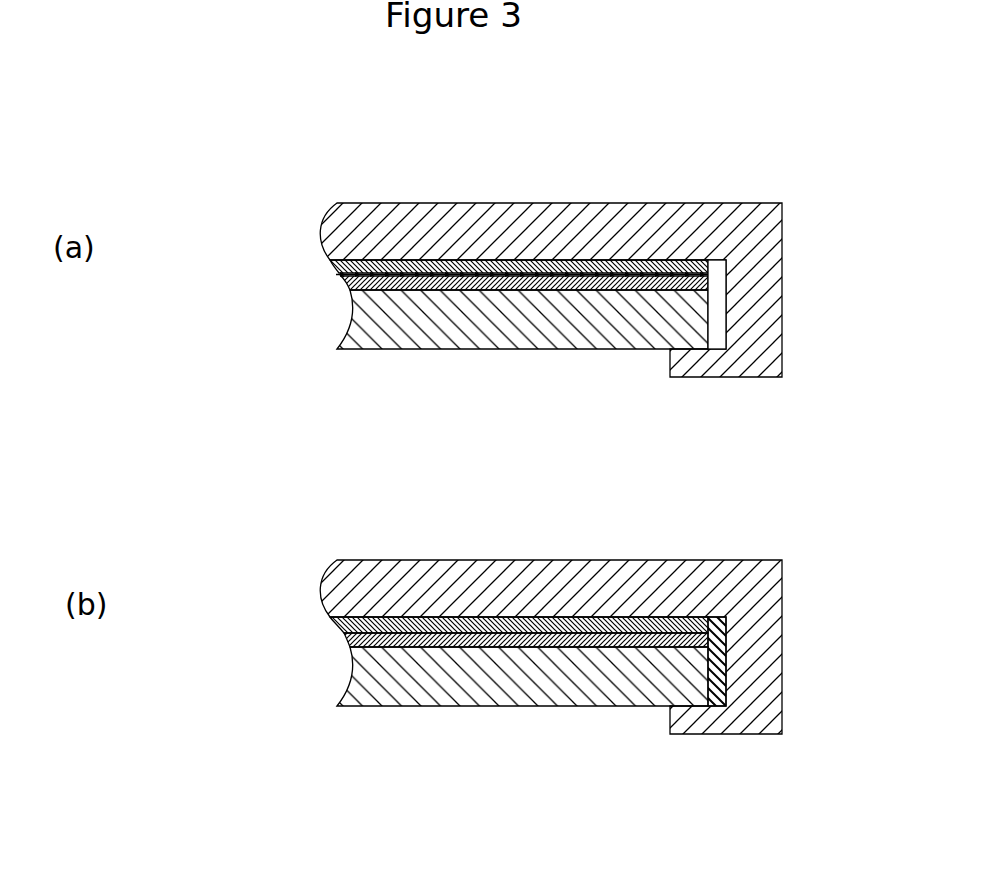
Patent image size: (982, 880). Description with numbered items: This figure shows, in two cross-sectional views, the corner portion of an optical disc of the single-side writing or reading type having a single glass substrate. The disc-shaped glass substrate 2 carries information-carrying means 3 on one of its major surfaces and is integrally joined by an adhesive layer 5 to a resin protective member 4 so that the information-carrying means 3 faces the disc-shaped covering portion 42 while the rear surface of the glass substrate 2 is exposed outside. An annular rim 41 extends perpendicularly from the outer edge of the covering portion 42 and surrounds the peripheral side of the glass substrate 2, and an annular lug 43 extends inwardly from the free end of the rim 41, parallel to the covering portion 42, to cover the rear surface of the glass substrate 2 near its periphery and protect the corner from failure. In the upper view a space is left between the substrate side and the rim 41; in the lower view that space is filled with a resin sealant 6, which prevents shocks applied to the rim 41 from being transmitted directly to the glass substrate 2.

The glass substrate 2 is at (370, 323).
The information-carrying means 3 is at (346, 285).
The protective member 4 is at (530, 479).
The annular rim 41 is at (752, 303).
The covering portion 42 is at (535, 225).
The annular lug 43 is at (690, 355).
The adhesive layer 5 is at (333, 262).
The resin sealant 6 is at (718, 690).